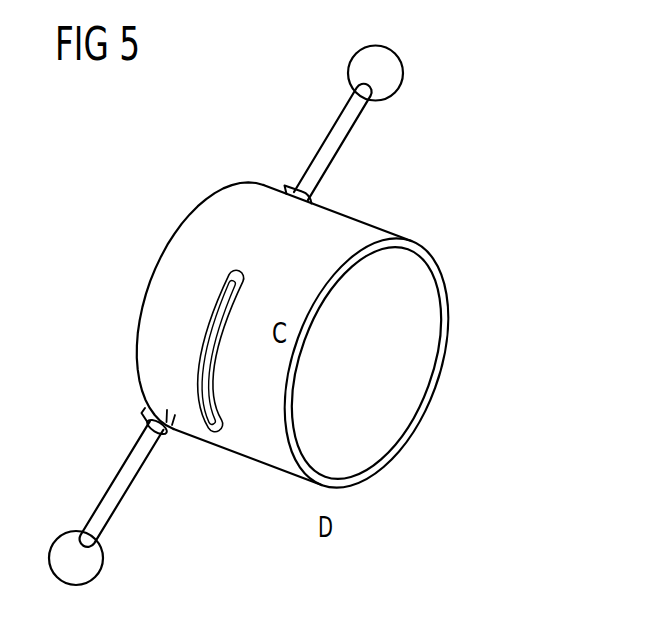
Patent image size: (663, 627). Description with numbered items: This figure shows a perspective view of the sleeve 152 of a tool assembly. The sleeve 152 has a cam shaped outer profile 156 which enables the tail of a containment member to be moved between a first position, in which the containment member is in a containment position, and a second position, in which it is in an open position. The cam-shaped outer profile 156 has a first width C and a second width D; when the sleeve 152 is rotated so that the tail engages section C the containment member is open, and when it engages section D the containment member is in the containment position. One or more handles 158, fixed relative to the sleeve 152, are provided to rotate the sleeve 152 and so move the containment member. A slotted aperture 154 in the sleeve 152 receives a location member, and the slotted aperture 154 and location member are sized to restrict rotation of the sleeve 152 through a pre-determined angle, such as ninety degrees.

The sleeve 152 is at (481, 81).
The slotted aperture 154 is at (209, 439).
The cam shaped outer profile 156 is at (421, 240).
The handles 158 is at (103, 560).